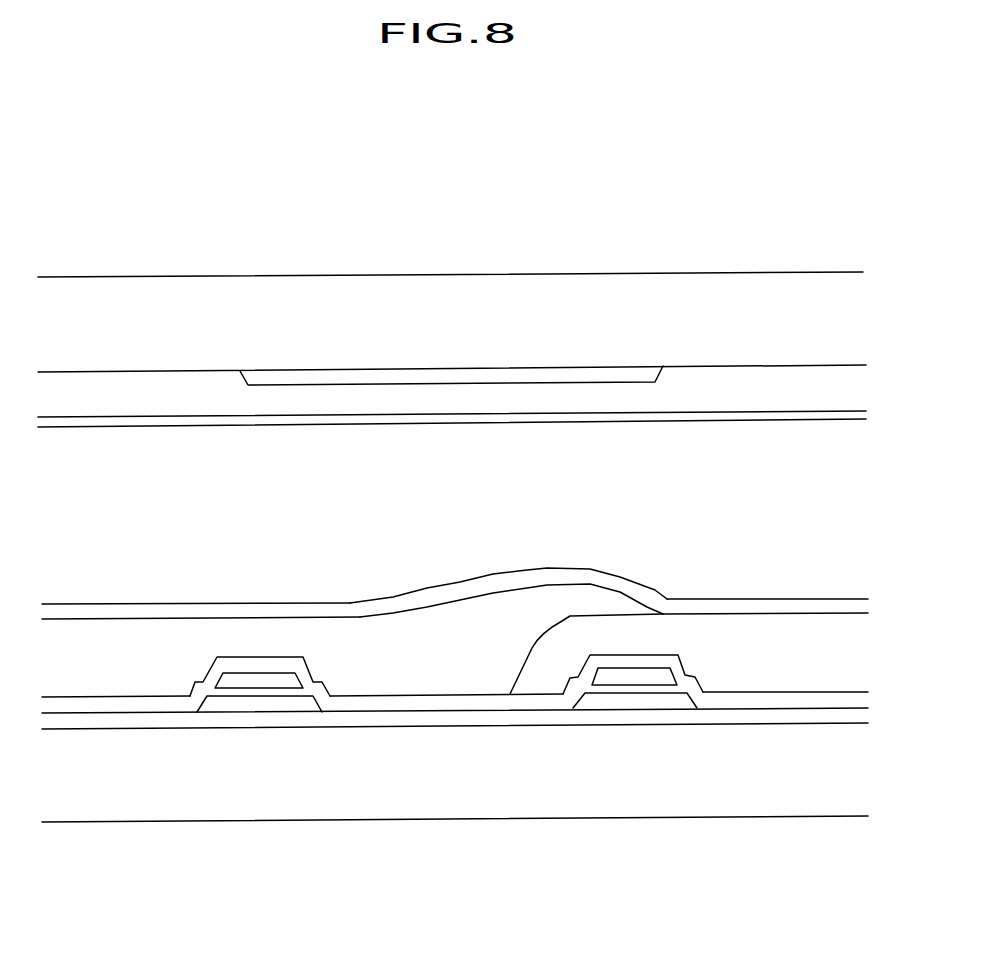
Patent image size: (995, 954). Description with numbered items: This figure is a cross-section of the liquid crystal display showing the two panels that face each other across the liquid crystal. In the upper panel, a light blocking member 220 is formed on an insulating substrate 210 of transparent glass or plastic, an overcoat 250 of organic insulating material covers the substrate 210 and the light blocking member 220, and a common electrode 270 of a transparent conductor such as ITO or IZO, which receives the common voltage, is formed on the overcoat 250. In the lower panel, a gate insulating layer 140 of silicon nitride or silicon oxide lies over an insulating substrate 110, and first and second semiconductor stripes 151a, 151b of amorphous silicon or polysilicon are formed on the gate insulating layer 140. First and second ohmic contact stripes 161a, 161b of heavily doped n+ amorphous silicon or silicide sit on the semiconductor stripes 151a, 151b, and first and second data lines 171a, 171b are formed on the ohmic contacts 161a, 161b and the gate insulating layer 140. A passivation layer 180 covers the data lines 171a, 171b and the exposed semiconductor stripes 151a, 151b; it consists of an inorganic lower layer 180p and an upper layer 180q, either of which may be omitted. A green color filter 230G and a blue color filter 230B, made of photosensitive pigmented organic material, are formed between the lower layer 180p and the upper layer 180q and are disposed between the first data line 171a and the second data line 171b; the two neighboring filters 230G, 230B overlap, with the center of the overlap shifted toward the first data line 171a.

The insulating substrate 110 is at (77, 800).
The gate insulating layer 140 is at (137, 718).
The first semiconductor stripe 151a is at (620, 700).
The second semiconductor stripe 151b is at (240, 705).
The first ohmic contact stripe 161a is at (647, 690).
The second ohmic contact stripe 161b is at (272, 692).
The first data line 171a is at (633, 677).
The second data line 171b is at (250, 680).
The passivation layer 180 is at (455, 754).
The lower layer 180p is at (408, 702).
The upper layer 180q is at (462, 592).
The insulating substrate 210 is at (222, 300).
The light blocking member 220 is at (311, 380).
The green color filter 230G is at (73, 645).
The blue color filter 230B is at (760, 638).
The overcoat 250 is at (717, 388).
The common electrode 270 is at (762, 415).